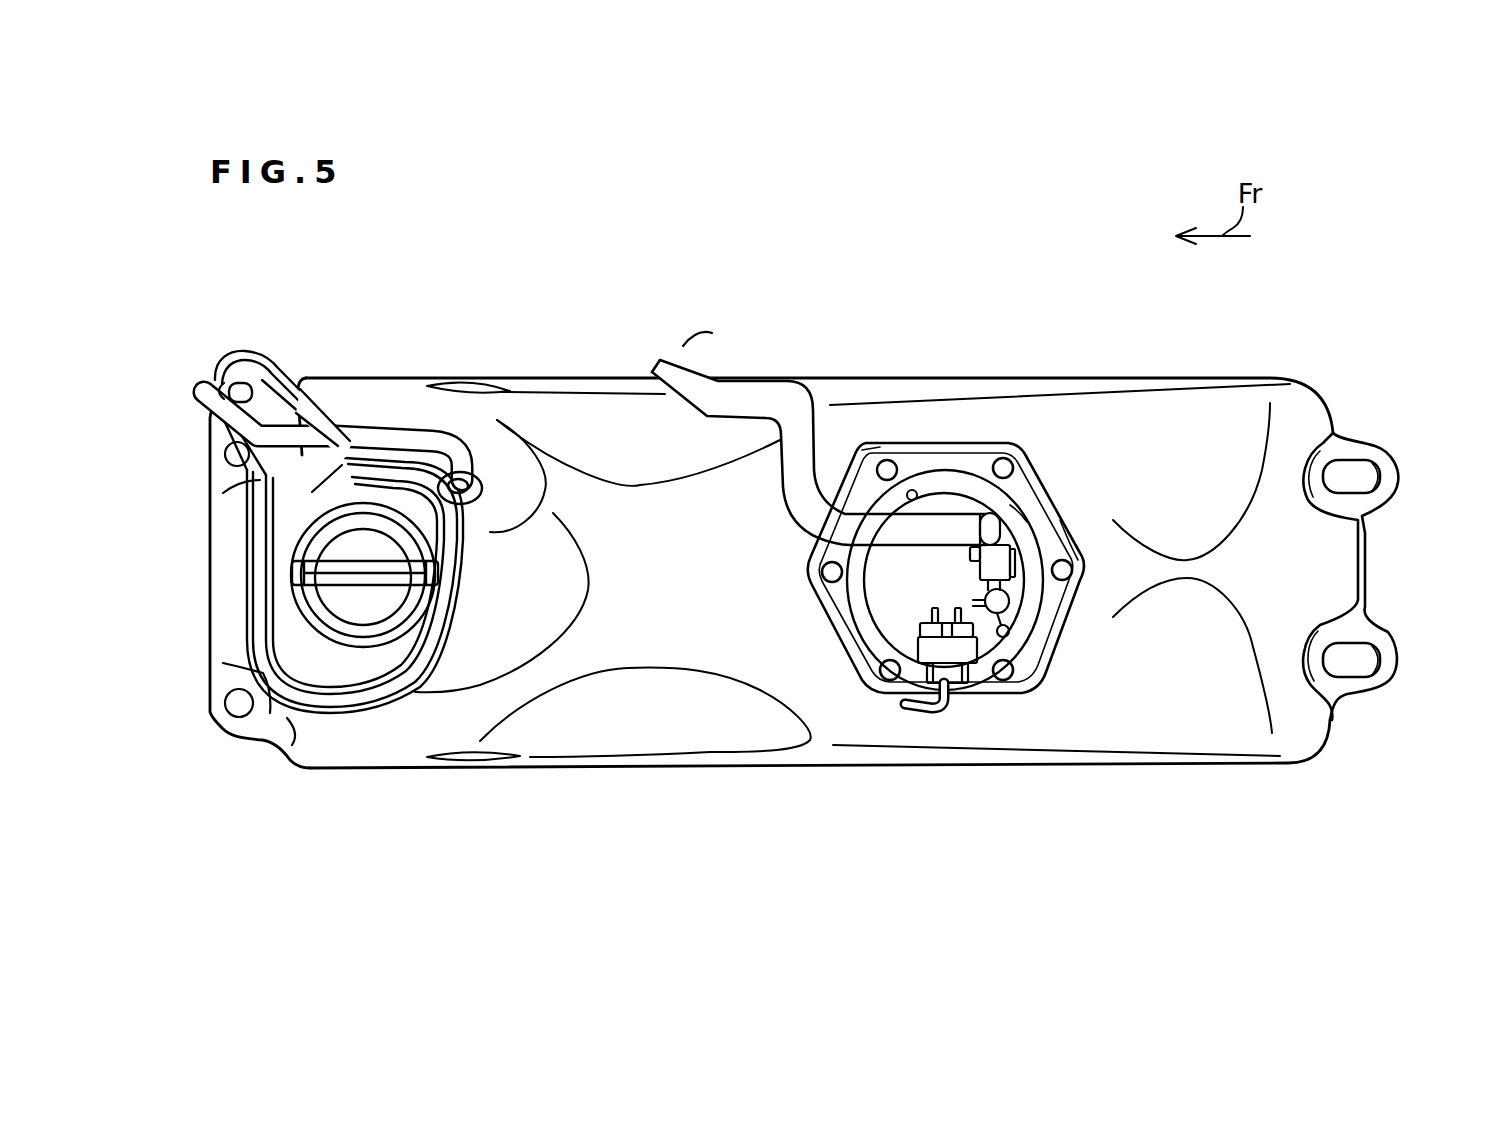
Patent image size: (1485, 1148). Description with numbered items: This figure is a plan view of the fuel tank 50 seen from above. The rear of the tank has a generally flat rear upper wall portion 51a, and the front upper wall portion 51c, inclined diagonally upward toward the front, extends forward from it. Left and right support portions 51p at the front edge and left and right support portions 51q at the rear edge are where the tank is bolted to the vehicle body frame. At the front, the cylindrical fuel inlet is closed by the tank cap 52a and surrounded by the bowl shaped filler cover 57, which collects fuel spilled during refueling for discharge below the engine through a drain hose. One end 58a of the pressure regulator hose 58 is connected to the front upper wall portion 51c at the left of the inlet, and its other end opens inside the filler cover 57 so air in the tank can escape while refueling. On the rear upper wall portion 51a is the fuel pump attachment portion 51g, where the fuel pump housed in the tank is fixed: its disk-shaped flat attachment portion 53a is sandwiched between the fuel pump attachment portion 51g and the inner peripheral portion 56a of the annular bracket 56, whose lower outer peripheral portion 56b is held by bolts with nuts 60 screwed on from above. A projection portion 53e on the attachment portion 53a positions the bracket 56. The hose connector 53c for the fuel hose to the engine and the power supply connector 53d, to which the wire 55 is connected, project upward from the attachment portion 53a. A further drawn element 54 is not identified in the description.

The fuel tank 50 is at (943, 238).
The rear upper wall portion 51a is at (1186, 723).
The front upper wall portion 51c is at (577, 727).
The fuel pump attachment portion 51g is at (876, 447).
The support portion 51p is at (212, 452).
The support portion 51q is at (1380, 454).
The tank cap 52a is at (393, 648).
The attachment portion 53a is at (945, 495).
The hose connector 53c is at (1013, 600).
The power supply connector 53d is at (978, 642).
The projection portion 53e is at (915, 488).
The fuel supply pipe 54 is at (700, 350).
The wire 55 is at (873, 700).
The bracket 56 is at (999, 443).
The inner peripheral portion 56a is at (1050, 490).
The outer peripheral portion 56b is at (1026, 519).
The filler cover 57 is at (330, 713).
The pressure regulator hose 58 is at (292, 383).
The one end of pressure regulator hose 58a is at (470, 440).
The nut 60 is at (882, 462).